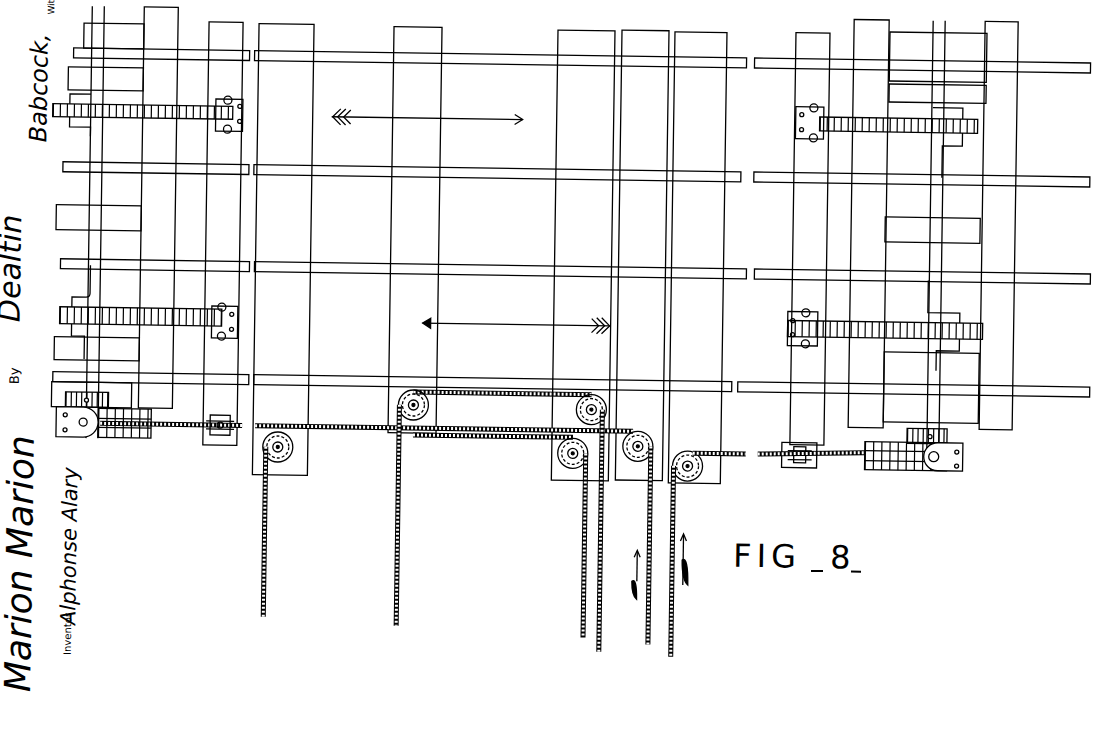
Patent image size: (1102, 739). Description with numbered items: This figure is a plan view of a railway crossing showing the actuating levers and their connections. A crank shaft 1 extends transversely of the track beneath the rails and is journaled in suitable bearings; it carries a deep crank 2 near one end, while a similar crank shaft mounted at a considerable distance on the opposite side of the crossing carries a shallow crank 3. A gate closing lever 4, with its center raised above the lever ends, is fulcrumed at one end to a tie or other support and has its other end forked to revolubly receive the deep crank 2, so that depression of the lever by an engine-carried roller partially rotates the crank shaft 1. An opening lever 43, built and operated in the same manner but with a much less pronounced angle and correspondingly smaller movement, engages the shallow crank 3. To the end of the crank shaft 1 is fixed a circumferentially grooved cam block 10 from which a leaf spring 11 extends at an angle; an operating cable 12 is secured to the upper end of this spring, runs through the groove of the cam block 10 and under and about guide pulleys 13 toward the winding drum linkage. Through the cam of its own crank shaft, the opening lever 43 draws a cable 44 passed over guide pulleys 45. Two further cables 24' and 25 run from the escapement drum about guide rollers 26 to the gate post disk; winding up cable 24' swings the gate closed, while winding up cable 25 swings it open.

The crank shaft 1 is at (88, 252).
The deep crank 2 is at (78, 137).
The shallow crank 3 is at (76, 312).
The gate closing lever 4 is at (157, 111).
The cam block 10 is at (137, 444).
The leaf spring 11 is at (92, 442).
The operating cable 12 is at (852, 450).
The guide pulleys 13 is at (802, 465).
The cable 24' is at (468, 538).
The cable 25 is at (270, 589).
The guide rollers 26 is at (297, 459).
The opening lever 43 is at (62, 321).
The cable 44 is at (265, 436).
The guide pulleys 45 is at (220, 443).